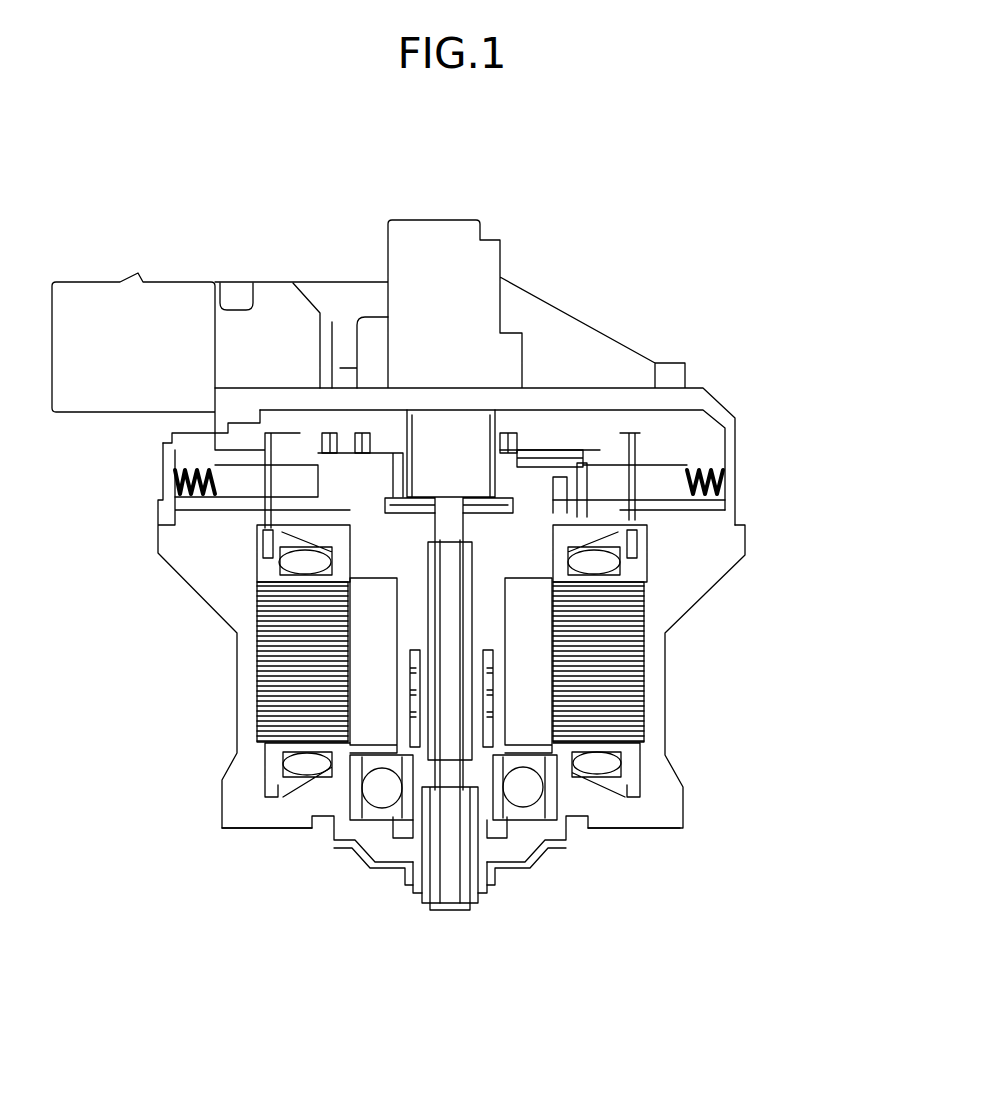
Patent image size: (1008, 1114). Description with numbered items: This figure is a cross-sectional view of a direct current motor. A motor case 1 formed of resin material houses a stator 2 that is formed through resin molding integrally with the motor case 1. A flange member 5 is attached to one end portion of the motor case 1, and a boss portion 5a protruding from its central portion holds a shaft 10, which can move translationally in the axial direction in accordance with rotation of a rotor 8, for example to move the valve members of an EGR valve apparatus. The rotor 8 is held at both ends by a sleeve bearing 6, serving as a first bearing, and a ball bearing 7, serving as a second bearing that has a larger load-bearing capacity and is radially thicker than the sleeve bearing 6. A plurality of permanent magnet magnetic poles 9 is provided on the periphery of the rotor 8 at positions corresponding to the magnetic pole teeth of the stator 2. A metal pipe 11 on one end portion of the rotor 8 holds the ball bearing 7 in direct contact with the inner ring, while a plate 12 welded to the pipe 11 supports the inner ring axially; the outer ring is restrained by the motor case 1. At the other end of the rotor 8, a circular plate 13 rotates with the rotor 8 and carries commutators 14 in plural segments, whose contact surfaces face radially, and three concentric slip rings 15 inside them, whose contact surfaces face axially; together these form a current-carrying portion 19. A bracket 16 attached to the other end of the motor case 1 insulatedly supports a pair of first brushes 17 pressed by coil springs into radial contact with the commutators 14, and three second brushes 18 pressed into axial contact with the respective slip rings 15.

The motor case 1 is at (717, 543).
The stator 2 is at (620, 637).
The flange member 5 is at (573, 848).
The boss portion 5a is at (487, 878).
The sleeve bearing 6 is at (570, 562).
The ball bearing 7 is at (535, 790).
The rotor 8 is at (333, 770).
The permanent magnet magnetic poles 9 is at (530, 677).
The shaft 10 is at (465, 890).
The pipe 11 is at (387, 825).
The plate 12 is at (395, 805).
The circular plate 13 is at (560, 483).
The commutators 14 is at (595, 478).
The slip rings 15 is at (535, 447).
The bracket 16 is at (733, 420).
The first brushes 17 is at (253, 483).
The second brushes 18 is at (330, 440).
The current-carrying portion 19 is at (793, 331).